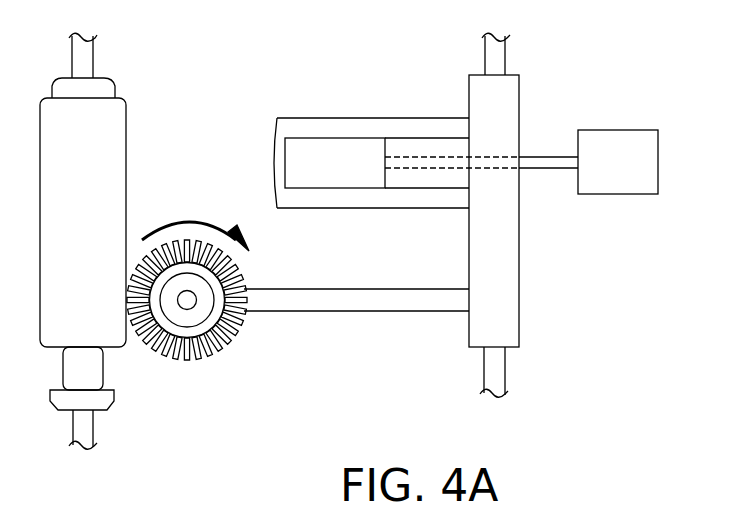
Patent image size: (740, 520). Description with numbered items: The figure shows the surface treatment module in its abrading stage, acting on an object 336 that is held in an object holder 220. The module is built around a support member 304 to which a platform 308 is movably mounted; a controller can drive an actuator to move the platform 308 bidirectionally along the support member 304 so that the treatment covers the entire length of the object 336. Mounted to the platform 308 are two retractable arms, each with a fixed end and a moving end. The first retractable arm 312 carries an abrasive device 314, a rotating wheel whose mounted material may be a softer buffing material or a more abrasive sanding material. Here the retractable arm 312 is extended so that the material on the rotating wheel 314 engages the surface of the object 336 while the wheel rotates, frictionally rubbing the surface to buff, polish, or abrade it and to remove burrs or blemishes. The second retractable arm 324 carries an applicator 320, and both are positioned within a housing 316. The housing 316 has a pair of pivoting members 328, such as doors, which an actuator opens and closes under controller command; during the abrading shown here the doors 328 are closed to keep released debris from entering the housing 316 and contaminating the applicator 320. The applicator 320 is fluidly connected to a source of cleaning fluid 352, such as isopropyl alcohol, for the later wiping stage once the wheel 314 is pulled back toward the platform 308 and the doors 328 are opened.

The object holder 220 is at (90, 58).
The object 336 is at (120, 118).
The abrasive device 314 is at (230, 341).
The retractable arm 312 is at (428, 305).
The pivoting members 328 is at (392, 135).
The housing 316 is at (297, 117).
The applicator 320 is at (347, 148).
The retractable arm 324 is at (425, 157).
The platform 308 is at (520, 118).
The support member 304 is at (506, 370).
The source of cleaning fluid 352 is at (618, 196).